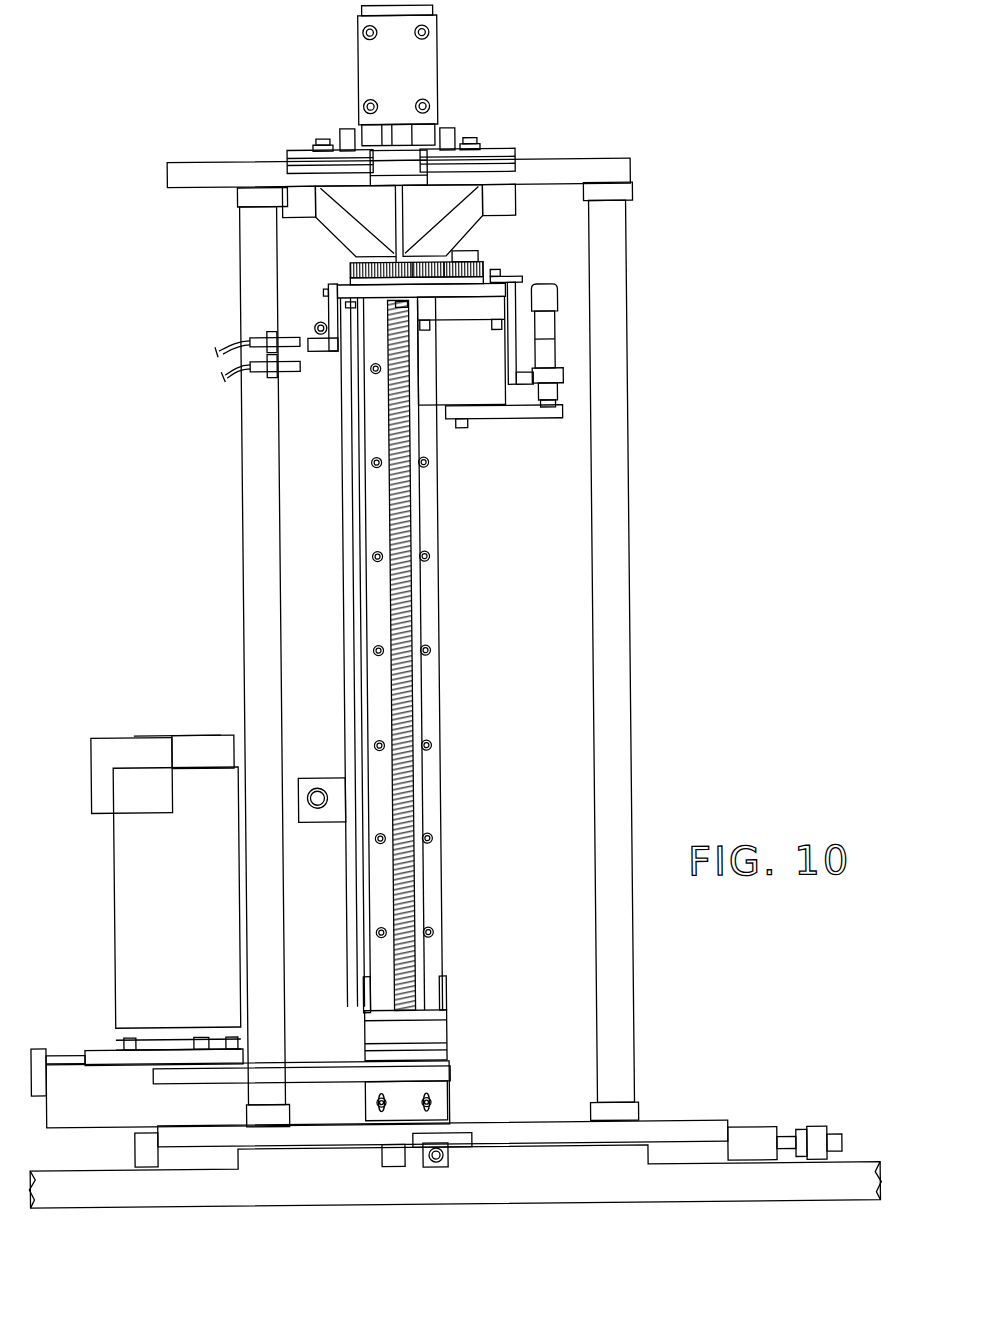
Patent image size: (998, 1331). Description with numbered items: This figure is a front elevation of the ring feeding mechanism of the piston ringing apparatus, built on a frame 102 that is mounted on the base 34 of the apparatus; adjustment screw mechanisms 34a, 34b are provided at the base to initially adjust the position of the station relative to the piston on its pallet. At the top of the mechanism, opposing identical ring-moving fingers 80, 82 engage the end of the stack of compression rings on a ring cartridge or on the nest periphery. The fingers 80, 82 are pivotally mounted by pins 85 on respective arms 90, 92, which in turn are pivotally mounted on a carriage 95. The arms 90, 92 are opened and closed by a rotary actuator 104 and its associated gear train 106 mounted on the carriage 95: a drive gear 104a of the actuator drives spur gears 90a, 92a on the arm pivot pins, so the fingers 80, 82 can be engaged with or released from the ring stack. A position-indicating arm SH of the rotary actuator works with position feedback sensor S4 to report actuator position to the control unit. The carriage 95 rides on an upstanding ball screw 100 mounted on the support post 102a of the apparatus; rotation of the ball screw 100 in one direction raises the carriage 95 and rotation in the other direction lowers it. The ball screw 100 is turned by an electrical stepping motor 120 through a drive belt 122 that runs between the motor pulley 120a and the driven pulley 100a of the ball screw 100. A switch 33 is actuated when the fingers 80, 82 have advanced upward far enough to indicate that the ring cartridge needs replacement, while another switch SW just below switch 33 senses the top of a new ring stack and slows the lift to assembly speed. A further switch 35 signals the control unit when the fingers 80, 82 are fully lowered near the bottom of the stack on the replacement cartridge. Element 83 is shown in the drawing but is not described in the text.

The ring-moving finger 80 is at (342, 157).
The ring-moving finger 82 is at (515, 148).
The pin 85 is at (324, 137).
The frame 102 is at (618, 160).
The arm 90 is at (359, 224).
The arm 92 is at (443, 221).
The spur gear 90a is at (355, 268).
The spur gear 92a is at (432, 267).
The gear train 106 is at (500, 254).
The drive gear 104a is at (487, 274).
The carriage 95 is at (326, 283).
The switch mounting bracket 83 is at (303, 312).
The switch 33 is at (248, 333).
The switch SW is at (264, 374).
The rotary actuator 104 is at (489, 362).
The position feedback sensor S4 is at (543, 408).
The rotary actuator position-indicating arm SH is at (558, 420).
The ball screw 100 is at (430, 632).
The support post 102a is at (434, 702).
The switch 35 is at (318, 778).
The electrical stepping motor 120 is at (166, 892).
The motor pulley 120a is at (178, 1083).
The drive belt 122 is at (296, 1085).
The driven pulley 100a is at (448, 1079).
The base 34 is at (160, 1212).
The adjustment screw mechanism 34a is at (436, 1172).
The adjustment screw mechanism 34b is at (790, 1126).